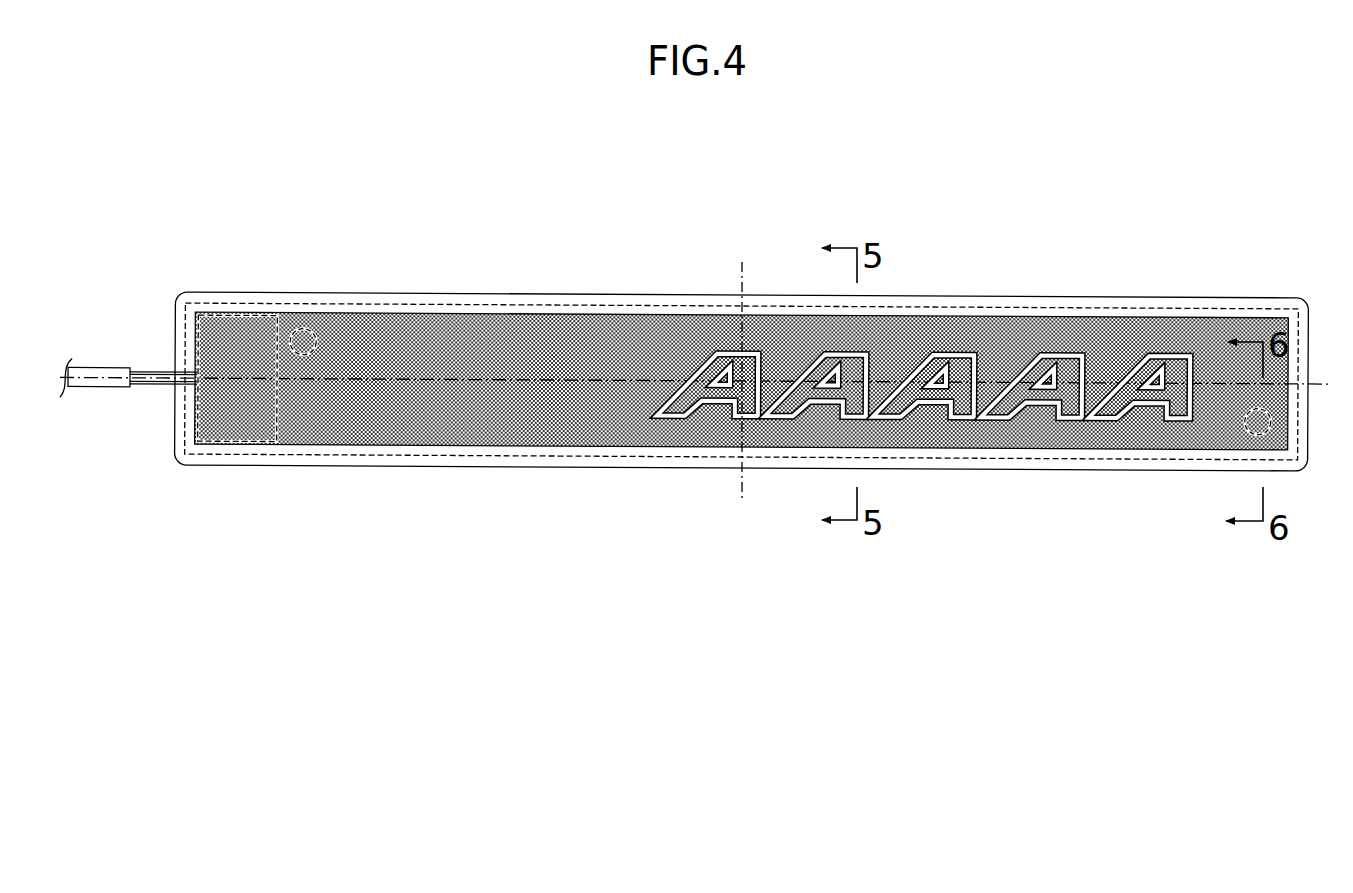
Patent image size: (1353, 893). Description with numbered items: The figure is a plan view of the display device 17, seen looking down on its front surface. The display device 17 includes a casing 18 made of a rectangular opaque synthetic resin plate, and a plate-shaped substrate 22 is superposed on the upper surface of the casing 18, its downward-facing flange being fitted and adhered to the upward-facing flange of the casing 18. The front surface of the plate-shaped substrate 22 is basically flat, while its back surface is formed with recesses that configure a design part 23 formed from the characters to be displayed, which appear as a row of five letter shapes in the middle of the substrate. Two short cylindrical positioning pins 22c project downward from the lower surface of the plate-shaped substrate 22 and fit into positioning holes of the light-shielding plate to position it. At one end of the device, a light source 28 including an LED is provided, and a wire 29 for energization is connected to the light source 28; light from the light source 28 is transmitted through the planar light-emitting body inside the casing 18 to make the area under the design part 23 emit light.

The display device 17 is at (688, 260).
The plate-shaped substrate 22 is at (470, 290).
The cylindrical positioning pins 22c is at (305, 329).
The design part 23 is at (960, 333).
The light source 28 is at (307, 449).
The casing 18 is at (562, 458).
The wire 29 is at (108, 366).